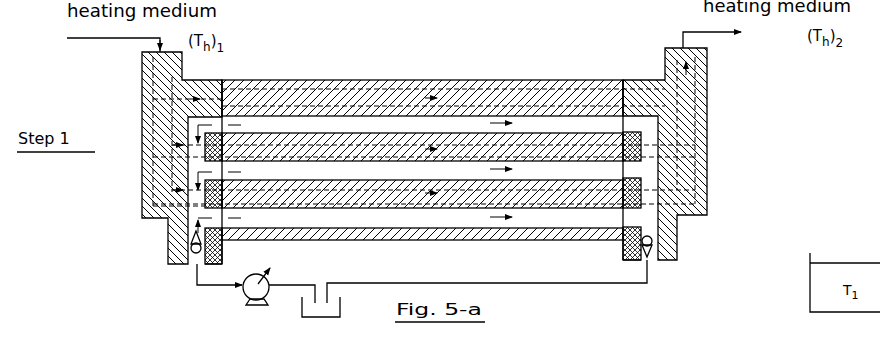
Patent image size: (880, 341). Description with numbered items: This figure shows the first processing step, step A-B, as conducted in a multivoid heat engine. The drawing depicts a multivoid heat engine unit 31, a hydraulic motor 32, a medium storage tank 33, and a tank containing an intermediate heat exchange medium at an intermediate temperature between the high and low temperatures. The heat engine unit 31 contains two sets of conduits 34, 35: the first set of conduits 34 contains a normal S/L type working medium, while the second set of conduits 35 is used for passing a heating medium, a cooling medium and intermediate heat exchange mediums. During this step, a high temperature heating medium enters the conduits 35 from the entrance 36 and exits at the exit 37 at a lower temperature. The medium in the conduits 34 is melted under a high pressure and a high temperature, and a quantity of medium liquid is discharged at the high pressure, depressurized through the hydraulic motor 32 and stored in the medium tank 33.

The multivoid heat engine unit 31 is at (357, 80).
The hydraulic motor 32 is at (247, 292).
The medium storage tank 33 is at (302, 312).
The first set of conduits 34 is at (565, 216).
The second set of conduits 35 is at (262, 195).
The entrance 36 is at (142, 52).
The exit 37 is at (707, 48).